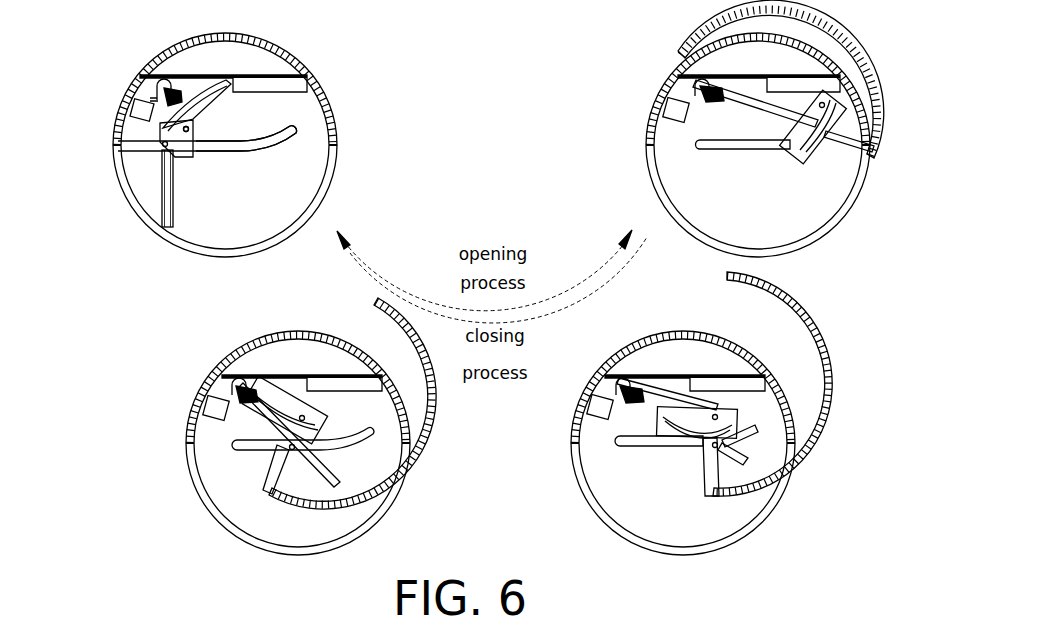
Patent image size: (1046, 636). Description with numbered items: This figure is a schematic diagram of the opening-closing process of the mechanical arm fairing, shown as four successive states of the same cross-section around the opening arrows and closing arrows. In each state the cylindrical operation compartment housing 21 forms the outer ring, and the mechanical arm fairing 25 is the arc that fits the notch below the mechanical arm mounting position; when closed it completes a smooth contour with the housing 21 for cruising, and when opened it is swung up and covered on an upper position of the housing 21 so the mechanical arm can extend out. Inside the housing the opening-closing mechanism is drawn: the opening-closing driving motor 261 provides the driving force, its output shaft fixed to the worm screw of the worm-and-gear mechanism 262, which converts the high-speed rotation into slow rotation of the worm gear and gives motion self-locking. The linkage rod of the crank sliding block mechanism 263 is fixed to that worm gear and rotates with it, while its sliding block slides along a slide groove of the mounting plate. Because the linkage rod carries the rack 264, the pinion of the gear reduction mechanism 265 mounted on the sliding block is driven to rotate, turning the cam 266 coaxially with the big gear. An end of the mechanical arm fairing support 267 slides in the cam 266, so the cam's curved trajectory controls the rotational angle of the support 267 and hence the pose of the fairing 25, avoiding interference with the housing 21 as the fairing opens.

The operation compartment housing 21 is at (158, 54).
The mechanical arm fairing 25 is at (124, 207).
The opening-closing driving motor 261 is at (132, 108).
The worm-and-gear mechanism 262 is at (151, 84).
The crank sliding block mechanism 263 is at (181, 157).
The rack 264 is at (177, 198).
The gear reduction mechanism 265 is at (207, 133).
The cam 266 is at (207, 110).
The mechanical arm fairing support 267 is at (140, 141).